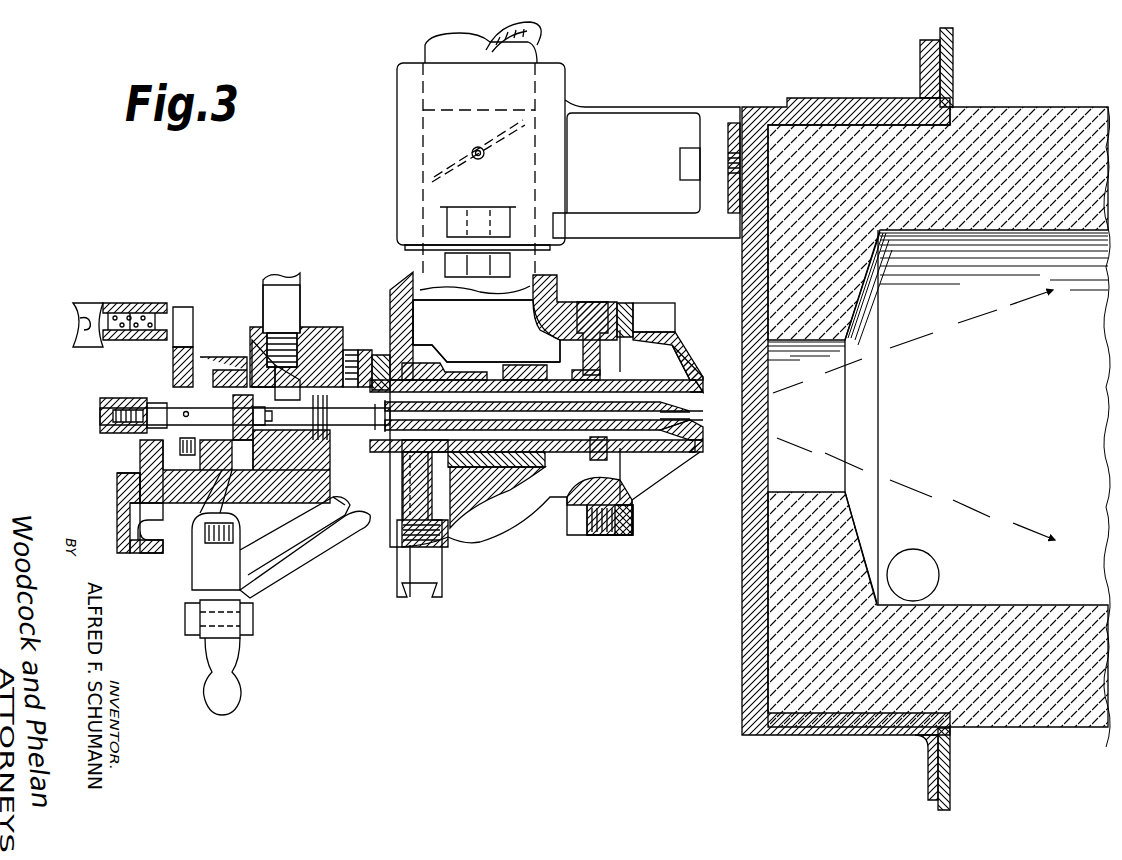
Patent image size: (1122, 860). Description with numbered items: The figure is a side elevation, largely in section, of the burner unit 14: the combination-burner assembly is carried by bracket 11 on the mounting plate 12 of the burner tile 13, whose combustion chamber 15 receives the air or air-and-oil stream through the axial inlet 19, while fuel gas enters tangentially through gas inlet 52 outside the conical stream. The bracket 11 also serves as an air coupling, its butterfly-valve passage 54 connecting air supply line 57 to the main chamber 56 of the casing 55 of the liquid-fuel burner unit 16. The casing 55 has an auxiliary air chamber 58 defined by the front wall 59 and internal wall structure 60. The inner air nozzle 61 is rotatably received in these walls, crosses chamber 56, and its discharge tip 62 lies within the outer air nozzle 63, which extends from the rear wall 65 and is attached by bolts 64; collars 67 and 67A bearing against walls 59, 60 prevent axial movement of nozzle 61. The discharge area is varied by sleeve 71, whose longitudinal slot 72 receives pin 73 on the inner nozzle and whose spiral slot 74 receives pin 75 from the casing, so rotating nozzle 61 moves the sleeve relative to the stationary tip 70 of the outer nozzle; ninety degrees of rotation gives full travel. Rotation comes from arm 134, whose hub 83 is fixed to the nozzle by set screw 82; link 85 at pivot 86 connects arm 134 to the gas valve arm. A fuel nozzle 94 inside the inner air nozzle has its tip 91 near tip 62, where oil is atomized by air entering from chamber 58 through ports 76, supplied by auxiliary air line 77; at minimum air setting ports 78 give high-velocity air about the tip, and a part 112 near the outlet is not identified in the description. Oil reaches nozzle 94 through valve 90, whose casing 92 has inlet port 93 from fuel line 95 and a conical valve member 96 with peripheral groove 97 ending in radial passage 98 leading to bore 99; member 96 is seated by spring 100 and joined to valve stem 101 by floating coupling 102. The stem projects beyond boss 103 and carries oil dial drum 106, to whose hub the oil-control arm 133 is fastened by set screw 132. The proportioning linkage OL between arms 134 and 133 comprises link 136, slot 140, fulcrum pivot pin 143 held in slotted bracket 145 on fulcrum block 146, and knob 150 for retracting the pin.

The bracket 11 is at (640, 226).
The mounting plate 12 is at (740, 635).
The burner tile 13 is at (1025, 722).
The burner unit 14 is at (684, 705).
The combustion chamber 15 is at (1052, 422).
The liquid-fuel burner unit 16 is at (560, 585).
The inlet 19 is at (765, 482).
The gas inlet 52 is at (930, 577).
The butterfly-valve passage 54 is at (423, 128).
The casing 55 is at (505, 537).
The main chamber 56 is at (525, 322).
The air supply line 57 is at (432, 52).
The auxiliary air chamber 58 is at (432, 382).
The front wall 59 is at (397, 290).
The internal wall structure 60 is at (452, 372).
The inner air nozzle 61 is at (545, 455).
The discharge tip 62 is at (703, 407).
The outer air nozzle 63 is at (685, 342).
The bolts 64 is at (630, 515).
The rear wall 65 is at (622, 522).
The collar 67 is at (380, 373).
The collar 67A is at (515, 374).
The stationary tip 70 is at (703, 392).
The sleeve 71 is at (578, 458).
The longitudinally extending slot 72 is at (616, 452).
The pin 73 is at (593, 462).
The spiral slot 74 is at (620, 384).
The pin 75 is at (585, 357).
The ports 76 is at (420, 382).
The auxiliary air line 77 is at (445, 585).
The ports 78 is at (700, 384).
The set screw 82 is at (352, 358).
The hub 83 is at (366, 356).
The link 85 is at (200, 638).
The pivot 86 is at (185, 615).
The valve 90 is at (305, 338).
The discharge tip 91 is at (680, 422).
The valve casing 92 is at (262, 505).
The inlet port 93 is at (270, 370).
The fuel nozzle 94 is at (560, 408).
The fuel line 95 is at (275, 285).
The conical valve member 96 is at (255, 340).
The peripheral groove 97 is at (283, 368).
The radial passage 98 is at (275, 450).
The bore 99 is at (262, 450).
The spring 100 is at (335, 515).
The valve stem 101 is at (180, 420).
The floating coupling 102 is at (218, 362).
The boss 103 is at (222, 520).
The oil dial drum 106 is at (205, 540).
The nozzle outlet 112 is at (703, 387).
The set screw 132 is at (185, 448).
The arm 133 is at (190, 345).
The arm 134 is at (262, 583).
The link 136 is at (125, 495).
The slot 140 is at (180, 308).
The pivot pin 143 is at (100, 414).
The bracket 145 is at (160, 508).
The block 146 is at (158, 405).
The knob 150 is at (75, 323).
The proportioning linkage OL is at (78, 408).